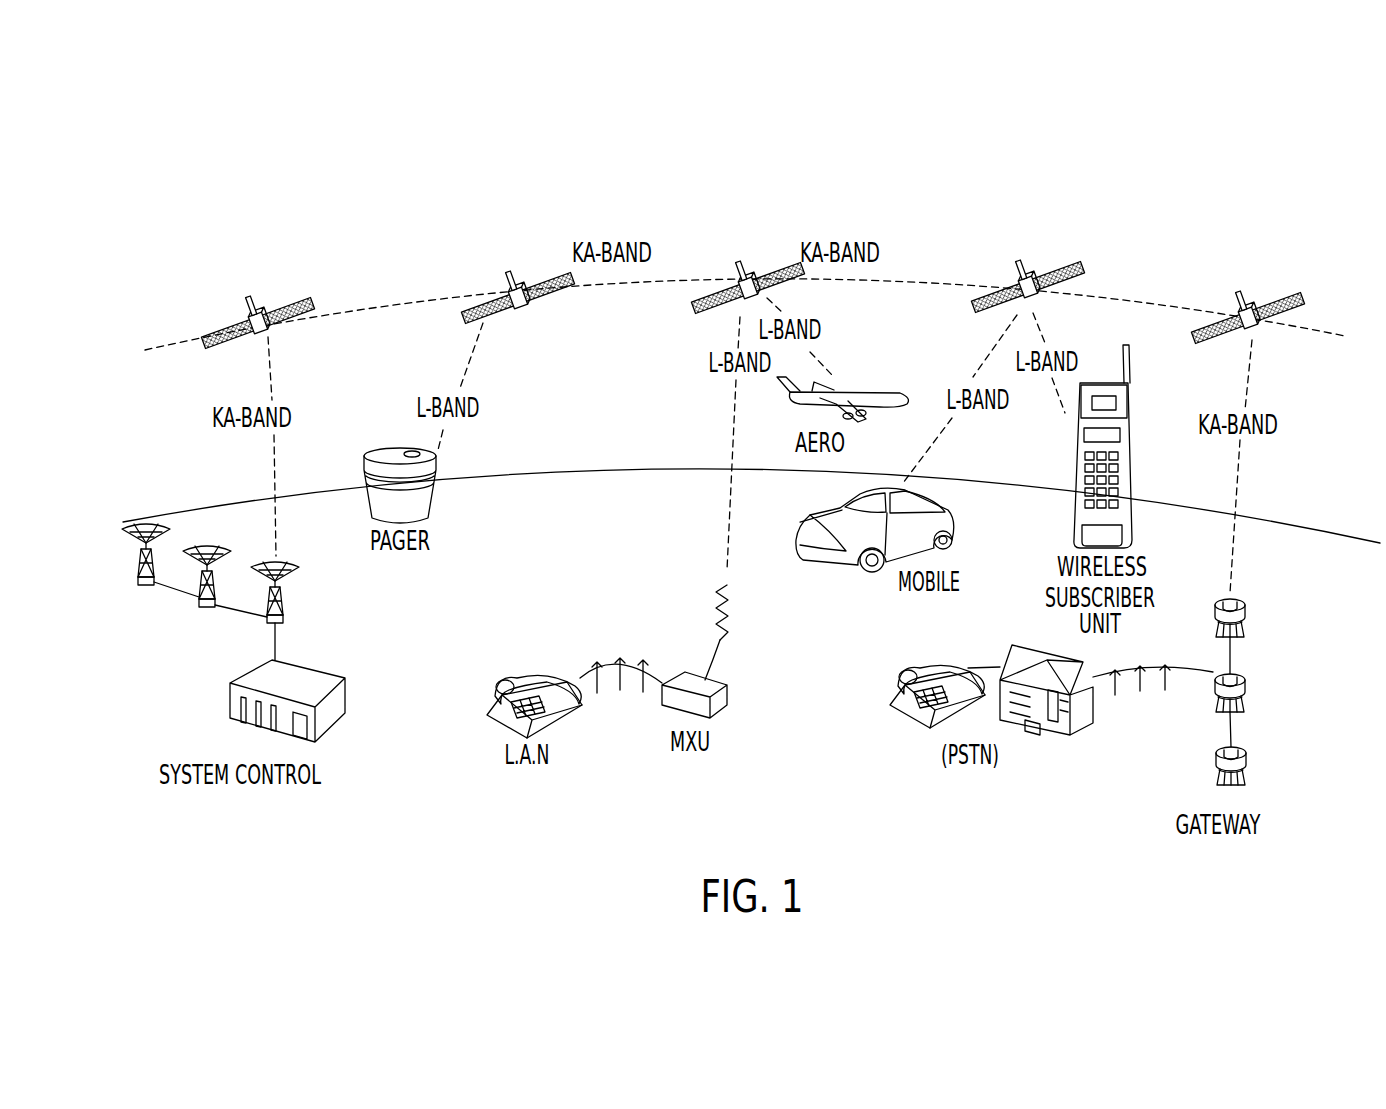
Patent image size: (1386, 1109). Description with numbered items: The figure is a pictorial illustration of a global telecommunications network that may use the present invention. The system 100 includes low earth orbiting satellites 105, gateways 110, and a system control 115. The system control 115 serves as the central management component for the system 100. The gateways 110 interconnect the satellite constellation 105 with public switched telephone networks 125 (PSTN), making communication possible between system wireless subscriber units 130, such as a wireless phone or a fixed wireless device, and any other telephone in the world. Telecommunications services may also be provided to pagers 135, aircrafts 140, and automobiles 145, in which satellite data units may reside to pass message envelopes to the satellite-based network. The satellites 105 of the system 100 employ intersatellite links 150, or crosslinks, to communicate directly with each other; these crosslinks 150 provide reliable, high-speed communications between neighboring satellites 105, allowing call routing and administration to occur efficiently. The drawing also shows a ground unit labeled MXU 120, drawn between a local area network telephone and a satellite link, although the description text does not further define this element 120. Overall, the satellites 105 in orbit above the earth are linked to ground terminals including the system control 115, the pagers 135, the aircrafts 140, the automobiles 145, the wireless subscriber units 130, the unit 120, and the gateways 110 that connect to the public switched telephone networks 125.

The system 100 is at (1250, 143).
The low earth orbiting satellites 105 is at (280, 312).
The gateways 110 is at (1247, 762).
The system control 115 is at (330, 713).
The MXU (multiplexer unit) 120 is at (727, 710).
The public switched telephone networks 125 is at (1085, 720).
The wireless subscriber units 130 is at (1134, 440).
The pagers 135 is at (432, 498).
The aircrafts 140 is at (885, 392).
The automobiles 145 is at (850, 568).
The intersatellite links 150 is at (420, 298).